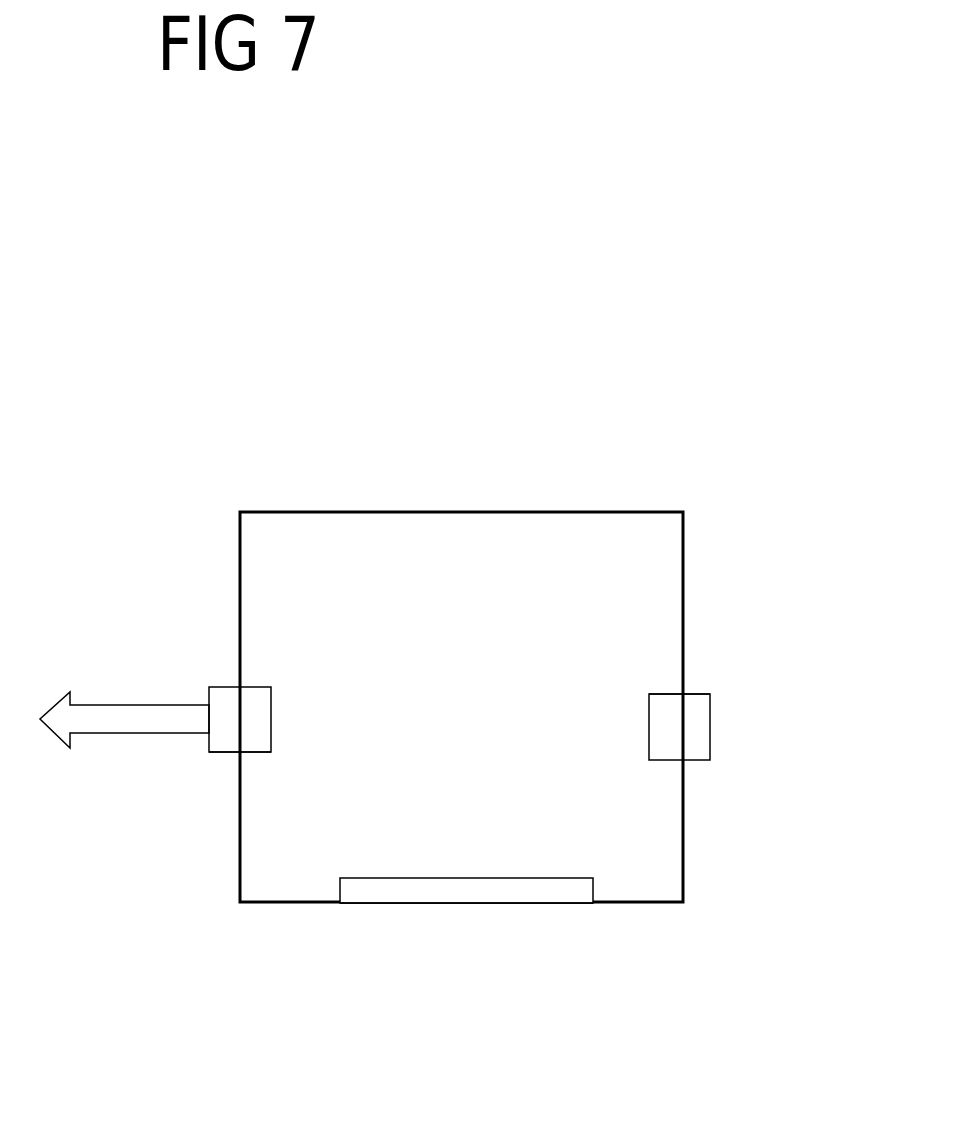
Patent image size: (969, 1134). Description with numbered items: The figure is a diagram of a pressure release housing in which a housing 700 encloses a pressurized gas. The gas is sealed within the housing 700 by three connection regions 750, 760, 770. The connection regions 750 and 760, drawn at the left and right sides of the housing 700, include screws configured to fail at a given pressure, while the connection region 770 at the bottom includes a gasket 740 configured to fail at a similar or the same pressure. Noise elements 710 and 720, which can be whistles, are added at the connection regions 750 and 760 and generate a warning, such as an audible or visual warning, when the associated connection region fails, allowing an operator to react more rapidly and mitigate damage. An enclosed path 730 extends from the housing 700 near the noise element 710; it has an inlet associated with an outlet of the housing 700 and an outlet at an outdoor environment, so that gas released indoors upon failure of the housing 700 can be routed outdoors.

The housing 700 is at (470, 512).
The noise element 710 is at (242, 723).
The noise element 720 is at (677, 725).
The enclosed path 730 is at (177, 722).
The gasket 740 is at (400, 878).
The connection region 750 is at (227, 753).
The connection region 760 is at (793, 682).
The connection region 770 is at (500, 903).